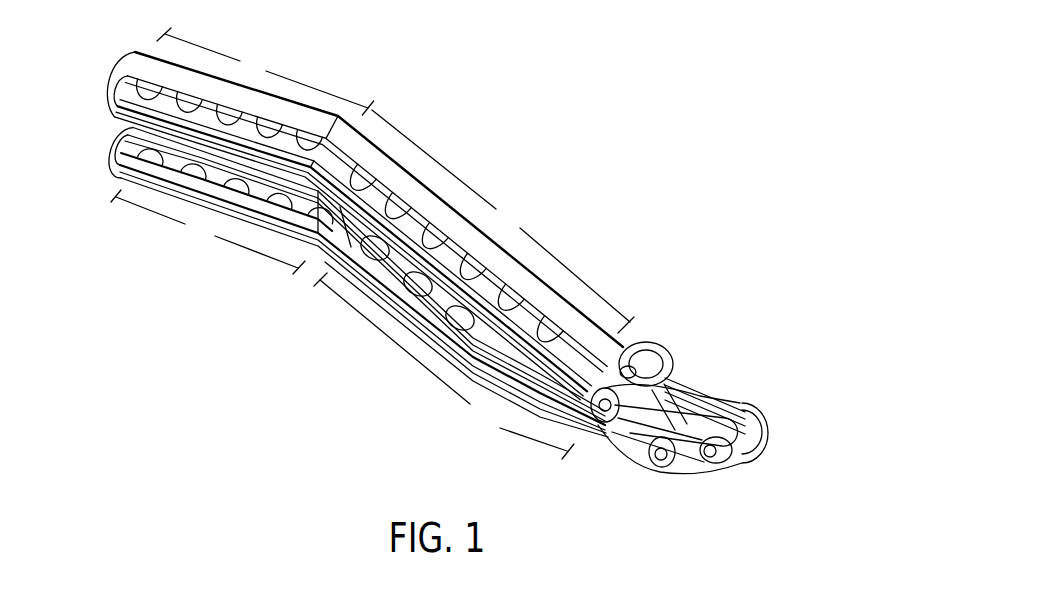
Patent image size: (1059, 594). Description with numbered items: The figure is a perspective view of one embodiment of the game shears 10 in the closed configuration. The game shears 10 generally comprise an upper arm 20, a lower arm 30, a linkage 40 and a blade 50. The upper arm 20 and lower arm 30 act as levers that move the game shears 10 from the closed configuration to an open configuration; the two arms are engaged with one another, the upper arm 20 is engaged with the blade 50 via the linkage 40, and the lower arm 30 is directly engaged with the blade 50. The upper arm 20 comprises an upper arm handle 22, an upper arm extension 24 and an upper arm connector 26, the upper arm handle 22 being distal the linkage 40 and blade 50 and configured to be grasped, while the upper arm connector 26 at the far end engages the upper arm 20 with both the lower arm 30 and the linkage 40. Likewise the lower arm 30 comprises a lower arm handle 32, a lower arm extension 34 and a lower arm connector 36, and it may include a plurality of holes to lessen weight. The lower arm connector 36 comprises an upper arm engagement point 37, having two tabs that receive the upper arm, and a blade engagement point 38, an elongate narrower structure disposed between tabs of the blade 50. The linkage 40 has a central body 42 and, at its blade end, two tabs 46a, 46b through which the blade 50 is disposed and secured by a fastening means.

The game shears 10 is at (679, 55).
The upper arm 20 is at (92, 82).
The upper arm handle 22 is at (252, 90).
The upper arm extension 24 is at (489, 229).
The upper arm connector 26 is at (637, 340).
The lower arm 30 is at (100, 160).
The lower arm handle 32 is at (223, 209).
The lower arm extension 34 is at (444, 345).
The lower arm connector 36 is at (663, 476).
The upper arm engagement point 37 is at (593, 422).
The blade engagement point 38 is at (746, 408).
The linkage 40 is at (666, 326).
The central body 42 is at (672, 383).
The tab 46a is at (655, 448).
The tab 46b is at (698, 404).
The blade 50 is at (698, 482).